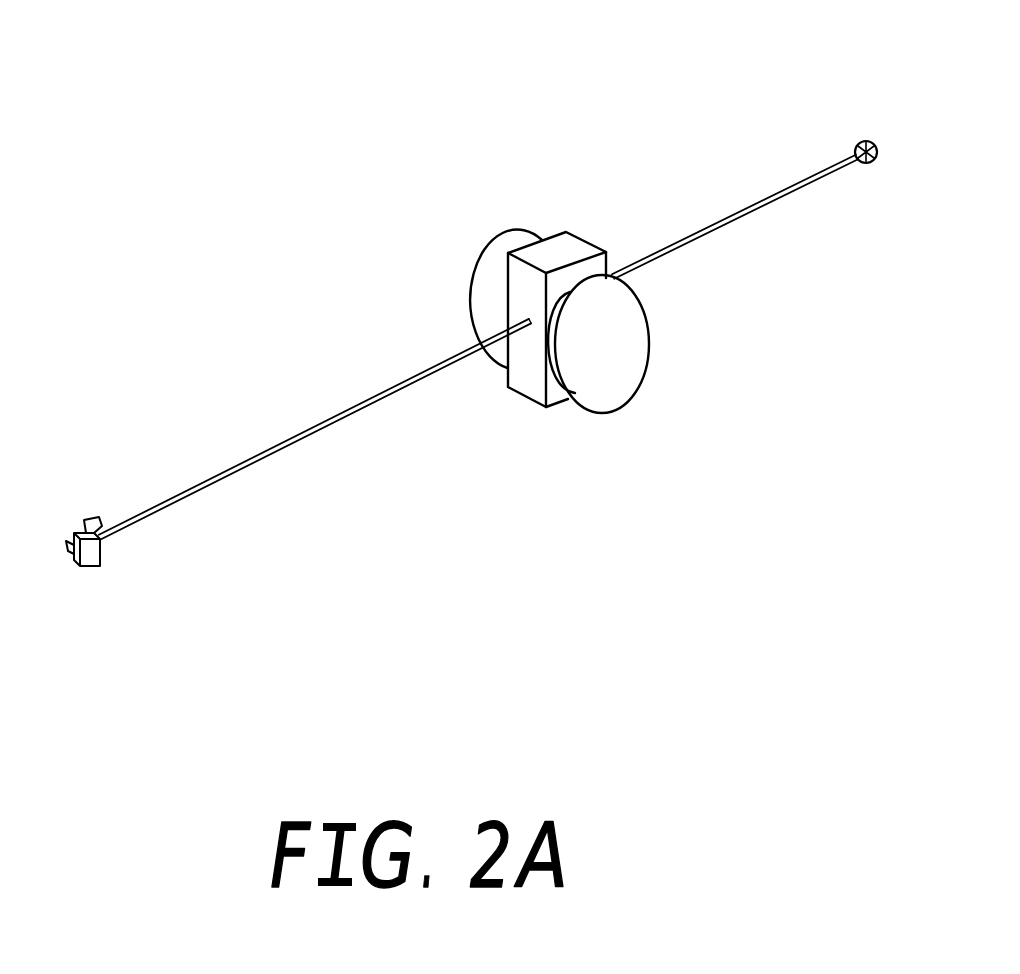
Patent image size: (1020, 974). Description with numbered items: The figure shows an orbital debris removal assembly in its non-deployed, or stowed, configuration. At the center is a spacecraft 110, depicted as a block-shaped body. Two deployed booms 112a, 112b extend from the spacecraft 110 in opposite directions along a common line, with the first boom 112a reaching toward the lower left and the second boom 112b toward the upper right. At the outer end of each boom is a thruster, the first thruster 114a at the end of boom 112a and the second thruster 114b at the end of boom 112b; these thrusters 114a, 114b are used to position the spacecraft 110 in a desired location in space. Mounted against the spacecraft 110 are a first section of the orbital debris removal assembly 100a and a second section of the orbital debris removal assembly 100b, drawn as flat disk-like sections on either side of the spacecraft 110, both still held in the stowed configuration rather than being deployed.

The first section of the orbital debris removal assembly 100a is at (649, 347).
The second section of the orbital debris removal assembly 100b is at (471, 266).
The spacecraft 110 is at (570, 247).
The boom 112a is at (197, 484).
The boom 112b is at (717, 229).
The thruster 114a is at (75, 525).
The thruster 114b is at (880, 148).